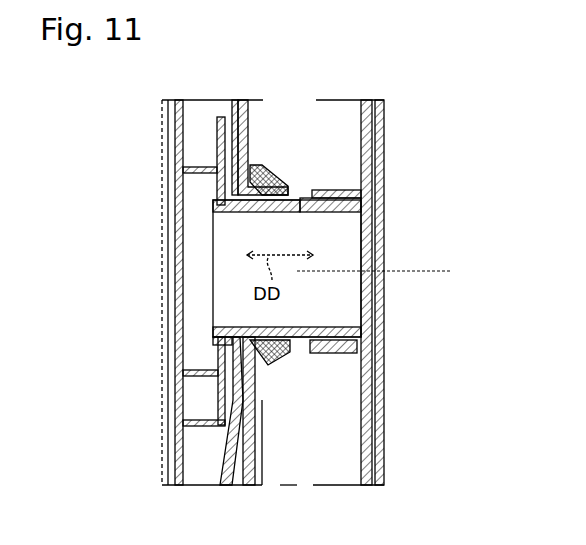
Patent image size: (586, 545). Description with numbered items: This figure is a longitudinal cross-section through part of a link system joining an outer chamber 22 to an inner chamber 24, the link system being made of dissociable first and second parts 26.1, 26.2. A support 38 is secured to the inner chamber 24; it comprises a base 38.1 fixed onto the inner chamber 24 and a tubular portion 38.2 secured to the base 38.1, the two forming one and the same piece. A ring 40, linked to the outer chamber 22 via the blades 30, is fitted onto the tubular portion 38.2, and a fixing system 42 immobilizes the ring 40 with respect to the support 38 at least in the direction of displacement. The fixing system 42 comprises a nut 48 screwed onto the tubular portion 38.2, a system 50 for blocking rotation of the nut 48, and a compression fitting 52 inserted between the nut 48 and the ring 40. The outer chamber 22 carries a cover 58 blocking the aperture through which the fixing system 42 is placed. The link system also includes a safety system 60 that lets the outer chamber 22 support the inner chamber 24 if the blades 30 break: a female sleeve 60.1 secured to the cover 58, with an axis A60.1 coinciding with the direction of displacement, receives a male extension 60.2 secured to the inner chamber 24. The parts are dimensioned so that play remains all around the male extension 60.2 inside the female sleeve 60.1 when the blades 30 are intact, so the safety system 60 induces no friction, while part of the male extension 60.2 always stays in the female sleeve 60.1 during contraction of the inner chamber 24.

The outer chamber 22 is at (398, 480).
The inner chamber 24 is at (152, 458).
The first part of the link system 26.1 is at (270, 450).
The second part of the link system 26.2 is at (205, 345).
The blades 30 is at (270, 463).
The support 38 is at (220, 423).
The base 38.1 is at (283, 368).
The tubular portion 38.2 is at (220, 400).
The ring 40 is at (220, 150).
The fixing system 42 is at (305, 180).
The nut 48 is at (294, 180).
The system for blocking rotation of the nut 50 is at (283, 170).
The compression fitting 52 is at (255, 180).
The cover 58 is at (383, 363).
The safety system 60 is at (340, 355).
The female sleeve 60.1 is at (343, 192).
The male extension 60.2 is at (327, 220).
The axis of the female sleeve A60.1 is at (415, 272).